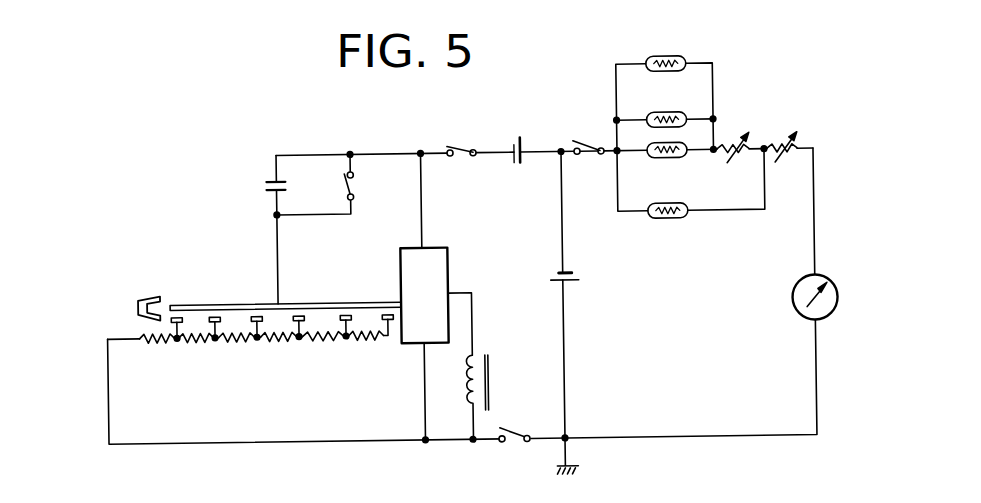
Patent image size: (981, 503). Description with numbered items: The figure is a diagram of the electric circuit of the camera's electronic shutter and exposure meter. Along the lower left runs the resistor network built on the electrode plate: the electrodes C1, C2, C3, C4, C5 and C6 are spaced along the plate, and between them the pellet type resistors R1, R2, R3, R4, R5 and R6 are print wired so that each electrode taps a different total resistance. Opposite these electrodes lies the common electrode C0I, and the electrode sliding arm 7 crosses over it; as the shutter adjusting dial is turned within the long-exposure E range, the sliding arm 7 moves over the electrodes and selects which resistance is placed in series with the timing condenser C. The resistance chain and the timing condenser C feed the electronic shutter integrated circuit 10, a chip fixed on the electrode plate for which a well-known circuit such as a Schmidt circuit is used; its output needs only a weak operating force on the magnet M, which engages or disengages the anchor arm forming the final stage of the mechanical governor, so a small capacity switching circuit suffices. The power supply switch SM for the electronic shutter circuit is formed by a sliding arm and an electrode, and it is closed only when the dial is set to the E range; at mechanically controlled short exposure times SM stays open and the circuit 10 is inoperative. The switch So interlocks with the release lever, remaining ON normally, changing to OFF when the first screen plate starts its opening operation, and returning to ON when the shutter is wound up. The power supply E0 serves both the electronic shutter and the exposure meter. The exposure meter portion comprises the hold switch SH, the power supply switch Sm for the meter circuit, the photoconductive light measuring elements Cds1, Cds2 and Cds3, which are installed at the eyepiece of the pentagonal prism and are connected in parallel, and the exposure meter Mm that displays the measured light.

The electrode sliding arm 7 is at (135, 301).
The electronic shutter integrated circuit 10 is at (446, 267).
The common electrode C0I is at (178, 298).
The electrode C1 is at (169, 315).
The electrode C2 is at (210, 300).
The electrode C3 is at (256, 300).
The electrode C4 is at (298, 299).
The electrode C5 is at (344, 299).
The electrode C6 is at (386, 299).
The pellet type resistor R1 is at (150, 339).
The pellet type resistor R2 is at (187, 339).
The pellet type resistor R3 is at (232, 339).
The pellet type resistor R4 is at (267, 336).
The pellet type resistor R5 is at (309, 337).
The resistor 6 R6 is at (364, 340).
The timing condenser C is at (286, 184).
The switch So is at (331, 184).
The hold switch SH is at (478, 138).
The power supply switch for exposure meter circuit Sm is at (583, 132).
The power supply switch for electronic shutter circuit SM is at (510, 452).
The power supply E0 is at (580, 271).
The magnet M is at (492, 397).
The exposure meter Mm is at (798, 292).
The photoconductive light measuring element Cds1 is at (685, 157).
The photoconductive light measuring element Cds2 is at (688, 118).
The photoconductive light measuring element Cds3 is at (688, 60).